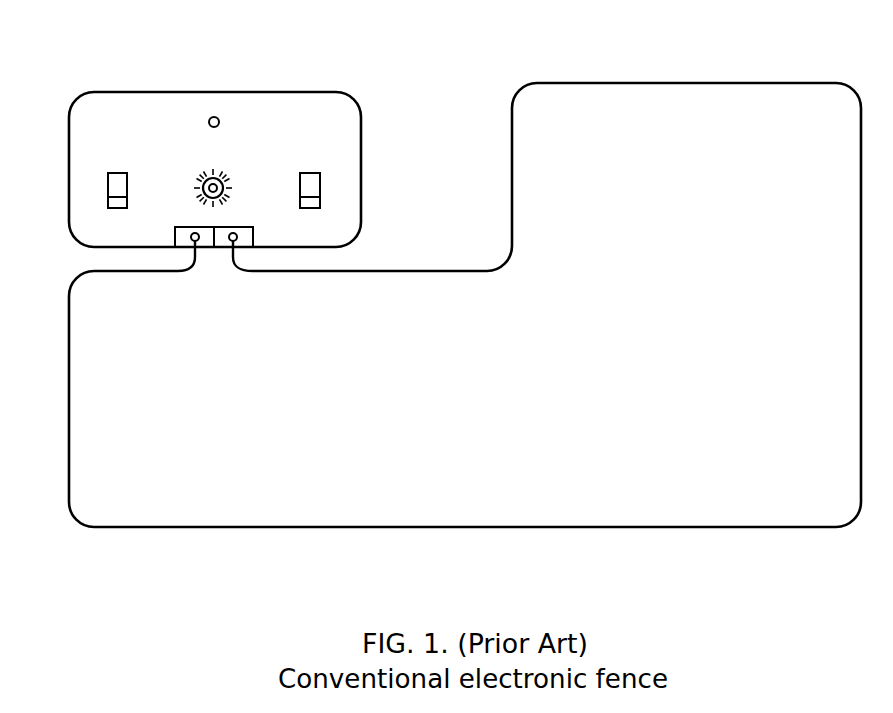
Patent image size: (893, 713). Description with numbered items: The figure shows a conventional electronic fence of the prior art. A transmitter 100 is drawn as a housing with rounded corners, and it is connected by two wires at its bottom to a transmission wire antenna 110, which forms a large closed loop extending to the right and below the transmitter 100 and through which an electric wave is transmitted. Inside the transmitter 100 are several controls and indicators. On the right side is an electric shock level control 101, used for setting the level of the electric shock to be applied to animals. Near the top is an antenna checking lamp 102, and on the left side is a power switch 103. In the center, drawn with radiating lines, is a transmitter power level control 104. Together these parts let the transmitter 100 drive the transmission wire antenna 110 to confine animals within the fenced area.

The transmitter 100 is at (176, 92).
The electric shock level control 101 is at (312, 173).
The antenna checking lamp 102 is at (214, 116).
The power switch 103 is at (111, 173).
The transmitter power level control 104 is at (221, 178).
The transmission wire antenna 110 is at (647, 83).